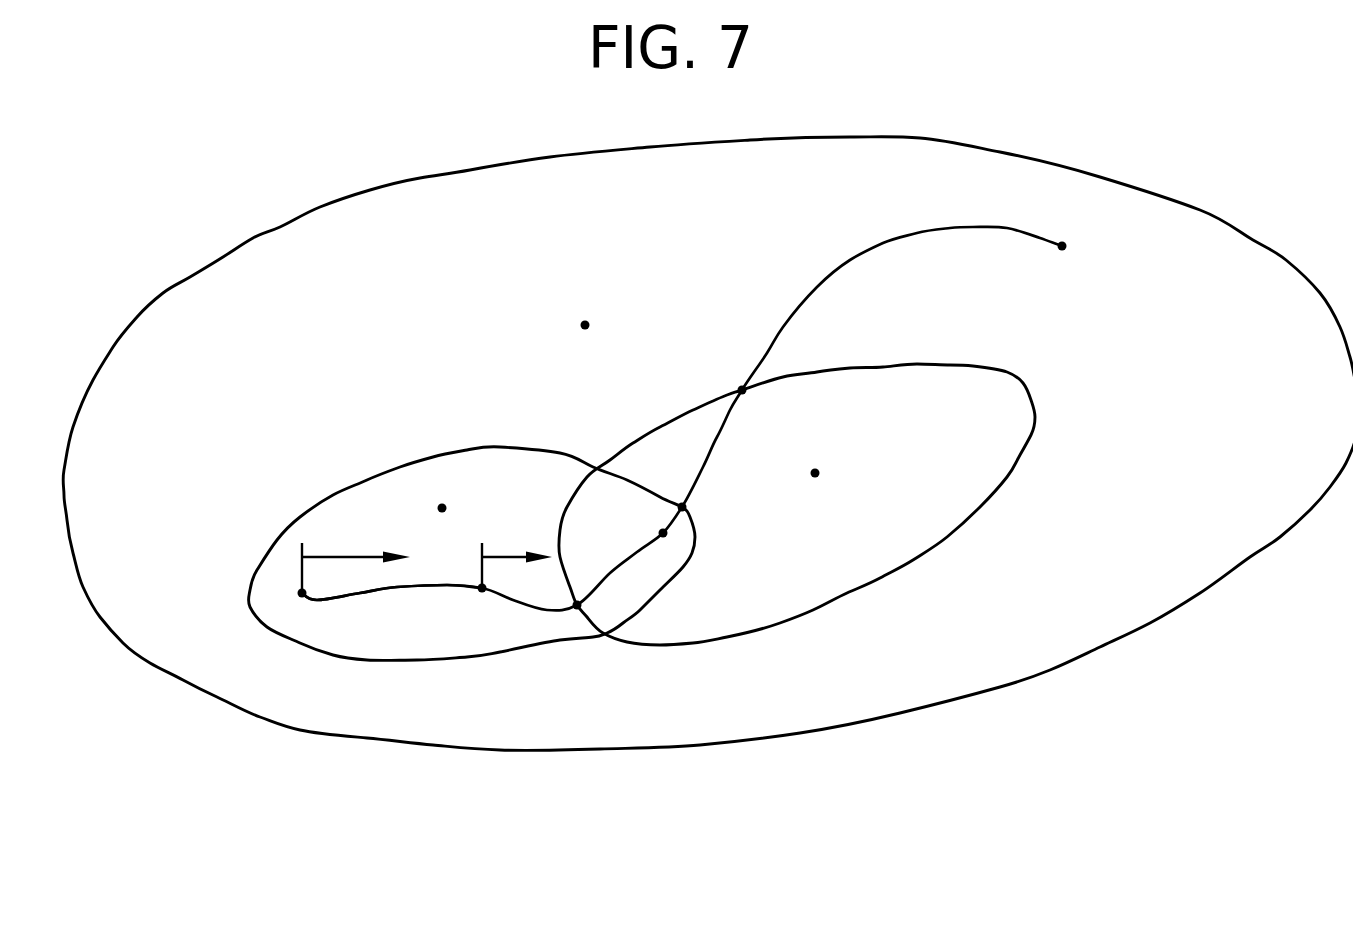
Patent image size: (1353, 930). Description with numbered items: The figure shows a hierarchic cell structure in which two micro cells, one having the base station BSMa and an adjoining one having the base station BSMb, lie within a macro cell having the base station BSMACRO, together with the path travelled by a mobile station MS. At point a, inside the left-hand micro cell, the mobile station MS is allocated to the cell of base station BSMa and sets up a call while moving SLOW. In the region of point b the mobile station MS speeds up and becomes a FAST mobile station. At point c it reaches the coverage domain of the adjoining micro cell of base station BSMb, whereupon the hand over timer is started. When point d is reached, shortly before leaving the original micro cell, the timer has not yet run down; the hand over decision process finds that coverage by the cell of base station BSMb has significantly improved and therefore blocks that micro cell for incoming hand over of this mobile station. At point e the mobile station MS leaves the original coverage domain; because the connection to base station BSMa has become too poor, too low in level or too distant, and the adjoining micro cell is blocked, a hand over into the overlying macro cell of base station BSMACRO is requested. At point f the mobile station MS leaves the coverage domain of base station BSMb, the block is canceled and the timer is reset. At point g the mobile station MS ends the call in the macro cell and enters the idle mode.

The point a is at (301, 607).
The point b is at (480, 607).
The point c is at (574, 621).
The point d is at (654, 530).
The point e is at (699, 500).
The point f is at (734, 374).
The point g is at (1068, 260).
The base station of the left-hand micro cell BSMa is at (442, 508).
The base station of the adjoining micro cell BSMb is at (797, 504).
The base station of the macro cell BSMACRO is at (631, 307).
The slow movement SLOW is at (338, 557).
The fast movement FAST is at (493, 557).
The mobile station MS is at (392, 609).